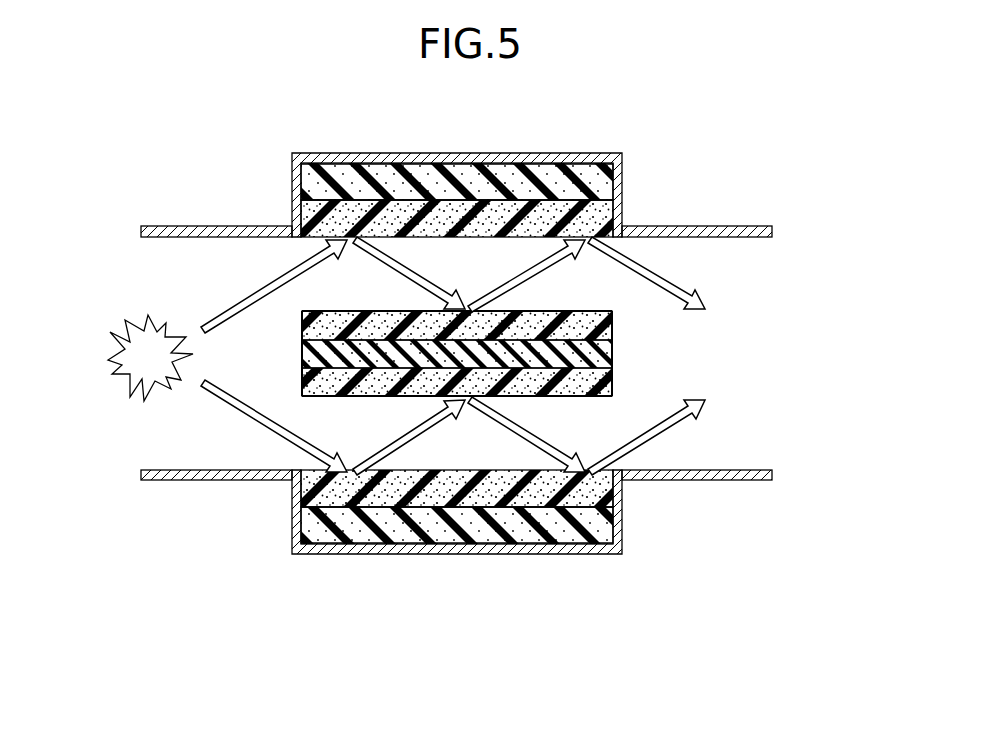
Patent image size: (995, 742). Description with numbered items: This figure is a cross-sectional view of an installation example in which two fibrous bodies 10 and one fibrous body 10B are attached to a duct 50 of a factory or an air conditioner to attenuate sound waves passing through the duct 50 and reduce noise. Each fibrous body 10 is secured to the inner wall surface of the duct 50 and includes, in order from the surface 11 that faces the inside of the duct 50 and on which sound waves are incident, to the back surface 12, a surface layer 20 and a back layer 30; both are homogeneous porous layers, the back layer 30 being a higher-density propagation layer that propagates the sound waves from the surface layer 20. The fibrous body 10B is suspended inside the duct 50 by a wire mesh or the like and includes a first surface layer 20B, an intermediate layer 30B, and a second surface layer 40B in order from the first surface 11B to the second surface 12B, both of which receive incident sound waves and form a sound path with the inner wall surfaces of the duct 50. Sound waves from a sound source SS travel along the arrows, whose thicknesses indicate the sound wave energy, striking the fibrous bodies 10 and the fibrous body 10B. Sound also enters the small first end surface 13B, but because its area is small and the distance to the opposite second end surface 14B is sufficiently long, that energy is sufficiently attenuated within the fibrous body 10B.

The fibrous body 10 is at (454, 355).
The surface 11 is at (448, 237).
The back surface 12 is at (479, 162).
The surface layer 20 is at (608, 218).
The back layer 30 is at (608, 182).
The duct 50 is at (180, 226).
The sound source SS is at (112, 356).
The fibrous body 10B is at (535, 349).
The first surface 11B is at (400, 311).
The second surface 12B is at (540, 397).
The first end surface 13B is at (302, 356).
The second end surface 14B is at (612, 318).
The first surface layer 20B is at (605, 328).
The intermediate layer 30B is at (605, 350).
The second surface layer 40B is at (605, 378).